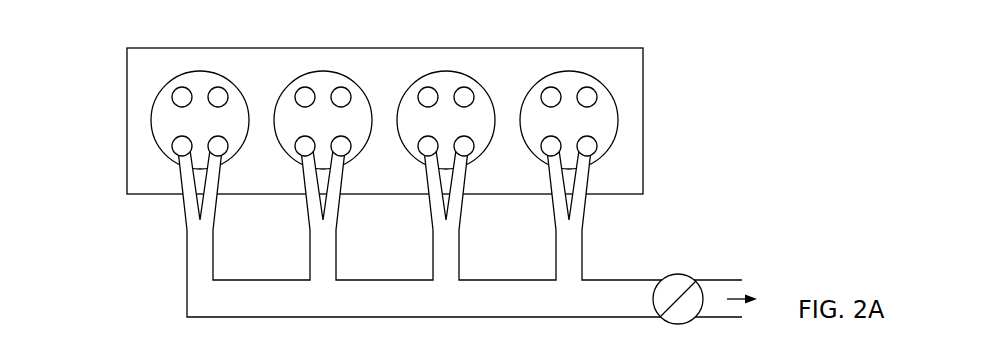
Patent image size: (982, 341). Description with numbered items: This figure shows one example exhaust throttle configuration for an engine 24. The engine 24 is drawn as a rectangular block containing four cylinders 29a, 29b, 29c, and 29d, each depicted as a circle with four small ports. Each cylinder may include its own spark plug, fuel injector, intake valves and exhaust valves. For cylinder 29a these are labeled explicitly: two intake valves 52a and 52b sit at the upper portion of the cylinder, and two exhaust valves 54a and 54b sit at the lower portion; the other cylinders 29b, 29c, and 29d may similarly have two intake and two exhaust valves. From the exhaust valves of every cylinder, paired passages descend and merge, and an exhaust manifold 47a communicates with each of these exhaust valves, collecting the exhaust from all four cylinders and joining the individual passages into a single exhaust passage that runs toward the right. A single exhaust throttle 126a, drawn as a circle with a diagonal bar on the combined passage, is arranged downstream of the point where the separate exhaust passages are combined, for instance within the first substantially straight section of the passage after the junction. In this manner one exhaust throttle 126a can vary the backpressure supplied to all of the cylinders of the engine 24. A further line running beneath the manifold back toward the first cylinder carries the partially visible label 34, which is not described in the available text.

The engine 24 is at (653, 88).
The cylinder 29a is at (172, 123).
The cylinder 29b is at (347, 123).
The cylinder 29c is at (469, 123).
The cylinder 29d is at (594, 123).
The intake valve 52a is at (177, 87).
The intake valve 52b is at (213, 87).
The exhaust valve 54a is at (176, 138).
The exhaust valve 54b is at (212, 138).
The exhaust manifold 47a is at (594, 268).
The exhaust throttle 126a is at (683, 275).
The return line 34 is at (464, 285).